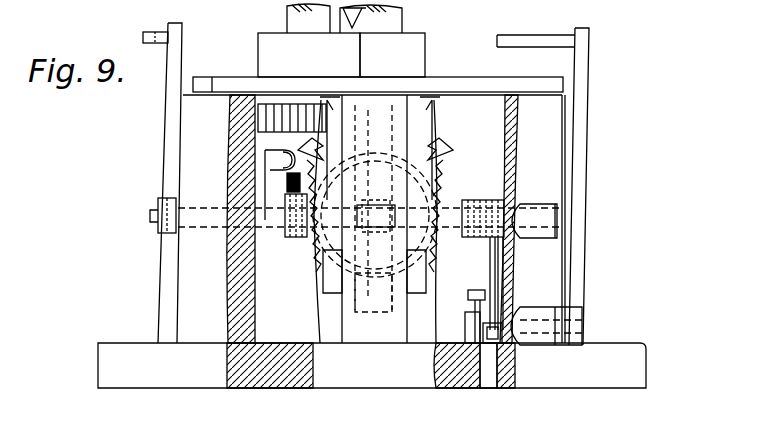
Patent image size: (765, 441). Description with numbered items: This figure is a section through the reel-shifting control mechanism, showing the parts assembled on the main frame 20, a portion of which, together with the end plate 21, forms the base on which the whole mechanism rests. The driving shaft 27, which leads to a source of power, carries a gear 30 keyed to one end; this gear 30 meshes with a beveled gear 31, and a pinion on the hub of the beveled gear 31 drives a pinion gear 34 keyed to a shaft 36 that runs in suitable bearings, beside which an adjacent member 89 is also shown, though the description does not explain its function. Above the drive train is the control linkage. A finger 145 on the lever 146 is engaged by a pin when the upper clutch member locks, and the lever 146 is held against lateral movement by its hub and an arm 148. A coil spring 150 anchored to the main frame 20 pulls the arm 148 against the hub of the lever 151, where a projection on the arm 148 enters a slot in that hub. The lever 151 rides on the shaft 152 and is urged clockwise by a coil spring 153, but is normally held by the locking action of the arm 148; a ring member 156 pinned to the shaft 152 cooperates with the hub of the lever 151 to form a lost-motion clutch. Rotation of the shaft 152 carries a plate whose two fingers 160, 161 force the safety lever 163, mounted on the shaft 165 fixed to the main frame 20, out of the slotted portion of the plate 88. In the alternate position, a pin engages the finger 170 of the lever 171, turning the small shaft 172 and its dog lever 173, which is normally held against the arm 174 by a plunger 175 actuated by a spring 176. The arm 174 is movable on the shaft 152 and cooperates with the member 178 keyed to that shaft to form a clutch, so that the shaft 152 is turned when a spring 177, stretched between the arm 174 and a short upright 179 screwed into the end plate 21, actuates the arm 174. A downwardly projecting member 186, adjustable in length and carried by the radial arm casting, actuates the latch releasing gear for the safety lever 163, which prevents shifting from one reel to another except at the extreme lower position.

The main frame 20 is at (190, 345).
The end plate 21 is at (290, 372).
The driving shaft 27 is at (320, 256).
The gear 30 is at (440, 176).
The beveled gear 31 is at (440, 148).
The pinion gear 34 is at (258, 112).
The shaft 36 is at (292, 20).
The plate 88 is at (482, 62).
The cylinder 89 is at (400, 27).
The finger 145 is at (143, 37).
The lever 146 is at (178, 24).
The arm 148 is at (287, 184).
The coil spring 150 is at (234, 230).
The lever 151 is at (265, 160).
The shaft 152 is at (165, 200).
The coil spring 153 is at (262, 138).
The ring member 156 is at (286, 240).
The finger 160 is at (452, 258).
The finger 161 is at (350, 100).
The safety lever 163 is at (412, 63).
The shaft 165 is at (316, 286).
The finger 170 is at (548, 20).
The lever 171 is at (589, 35).
The small shaft 172 is at (572, 312).
The dog lever 173 is at (503, 336).
The arm 174 is at (498, 204).
The plunger 175 is at (438, 390).
The spring 176 is at (495, 390).
The spring 177 is at (497, 300).
The member 178 is at (512, 200).
The short upright 179 is at (468, 318).
The downwardly projecting member 186 is at (343, 38).